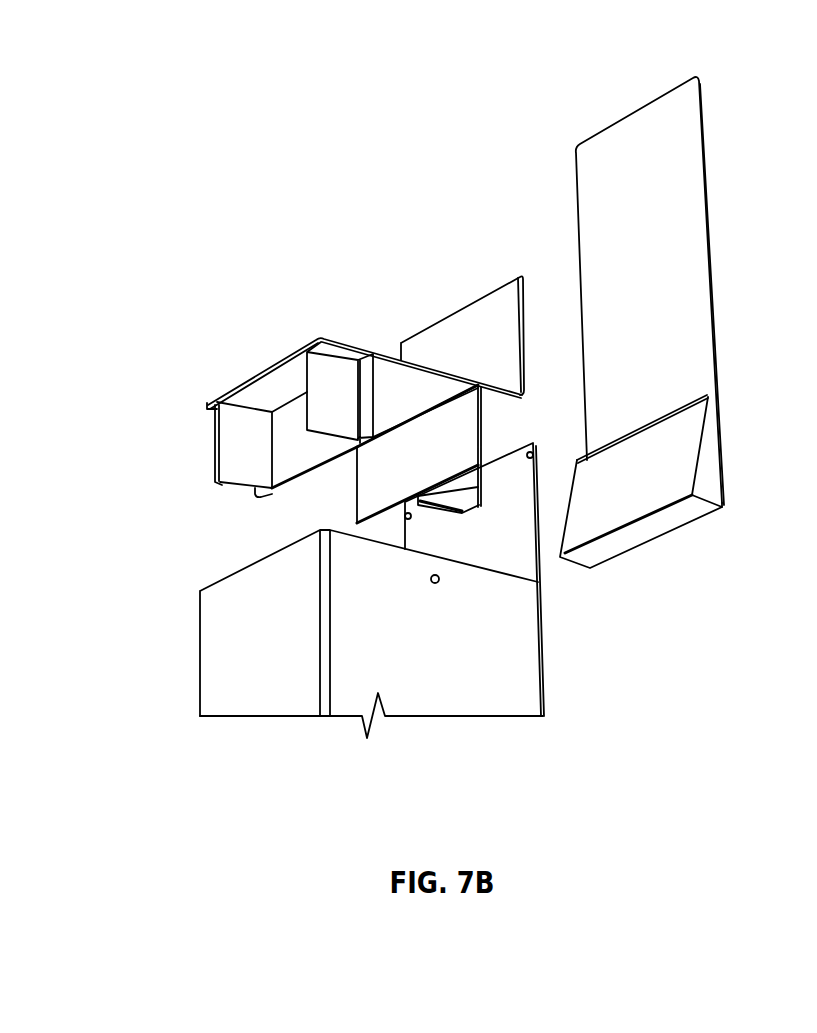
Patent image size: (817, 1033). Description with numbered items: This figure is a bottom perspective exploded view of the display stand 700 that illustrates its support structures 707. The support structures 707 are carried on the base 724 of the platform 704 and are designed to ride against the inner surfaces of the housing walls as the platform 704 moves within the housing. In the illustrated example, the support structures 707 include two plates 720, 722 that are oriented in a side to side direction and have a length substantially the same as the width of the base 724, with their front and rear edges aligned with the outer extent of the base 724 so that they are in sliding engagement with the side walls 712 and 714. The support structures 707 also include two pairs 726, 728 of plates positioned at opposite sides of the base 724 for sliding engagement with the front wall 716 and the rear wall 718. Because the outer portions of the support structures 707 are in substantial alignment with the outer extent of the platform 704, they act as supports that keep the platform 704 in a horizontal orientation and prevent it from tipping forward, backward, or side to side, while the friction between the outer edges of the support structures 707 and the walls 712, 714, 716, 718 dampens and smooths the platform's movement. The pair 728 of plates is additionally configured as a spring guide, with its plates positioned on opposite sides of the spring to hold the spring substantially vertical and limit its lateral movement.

The display stand 700 is at (727, 62).
The platform 704 is at (318, 385).
The base 724 is at (286, 350).
The support structures 707 is at (203, 438).
The pair of plates 726 is at (207, 478).
The plate 720 is at (279, 491).
The plate 722 is at (378, 490).
The pair of plates 728 is at (453, 488).
The side wall 712 is at (379, 615).
The side wall 714 is at (500, 638).
The front wall 716 is at (258, 718).
The rear wall 718 is at (547, 702).